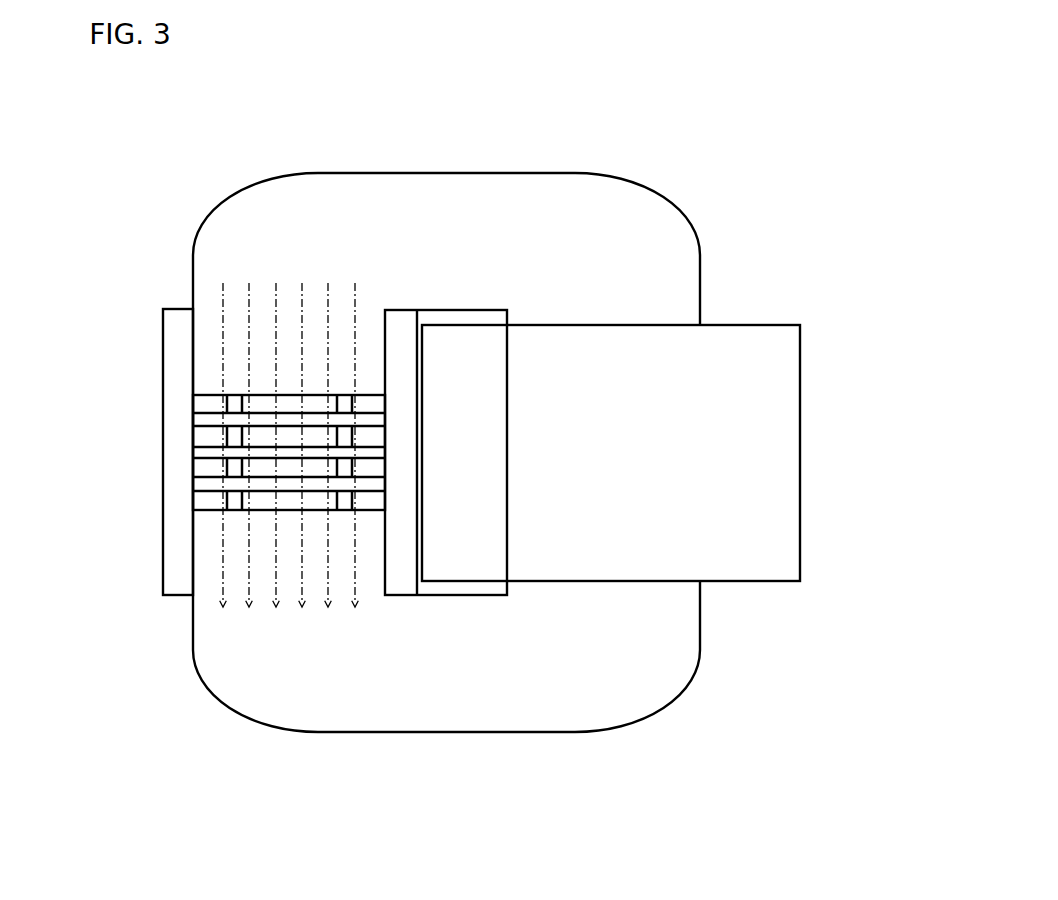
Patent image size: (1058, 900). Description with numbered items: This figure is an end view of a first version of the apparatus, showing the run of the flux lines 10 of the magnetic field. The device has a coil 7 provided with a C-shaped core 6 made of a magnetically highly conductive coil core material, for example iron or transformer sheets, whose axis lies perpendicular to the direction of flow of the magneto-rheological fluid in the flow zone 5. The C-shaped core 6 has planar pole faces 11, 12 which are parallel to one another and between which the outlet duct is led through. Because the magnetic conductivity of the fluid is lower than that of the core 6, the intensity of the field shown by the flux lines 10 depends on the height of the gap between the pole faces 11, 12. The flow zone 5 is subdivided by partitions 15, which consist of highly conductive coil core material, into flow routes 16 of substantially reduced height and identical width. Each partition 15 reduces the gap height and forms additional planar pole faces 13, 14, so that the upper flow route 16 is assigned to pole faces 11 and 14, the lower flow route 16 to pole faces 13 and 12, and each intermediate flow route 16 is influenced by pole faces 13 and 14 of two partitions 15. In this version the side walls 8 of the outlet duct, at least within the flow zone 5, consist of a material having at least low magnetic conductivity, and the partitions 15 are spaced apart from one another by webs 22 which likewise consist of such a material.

The flow zone 5 is at (385, 483).
The C-shaped core 6 is at (588, 222).
The coil 7 is at (720, 425).
The side walls 8 is at (178, 343).
The flux lines 10 is at (222, 297).
The pole face 11 is at (215, 397).
The pole face 12 is at (223, 499).
The pole face 13 is at (265, 463).
The pole face 14 is at (288, 470).
The partition 15 is at (214, 421).
The flow route 16 is at (292, 466).
The web 22 is at (345, 492).